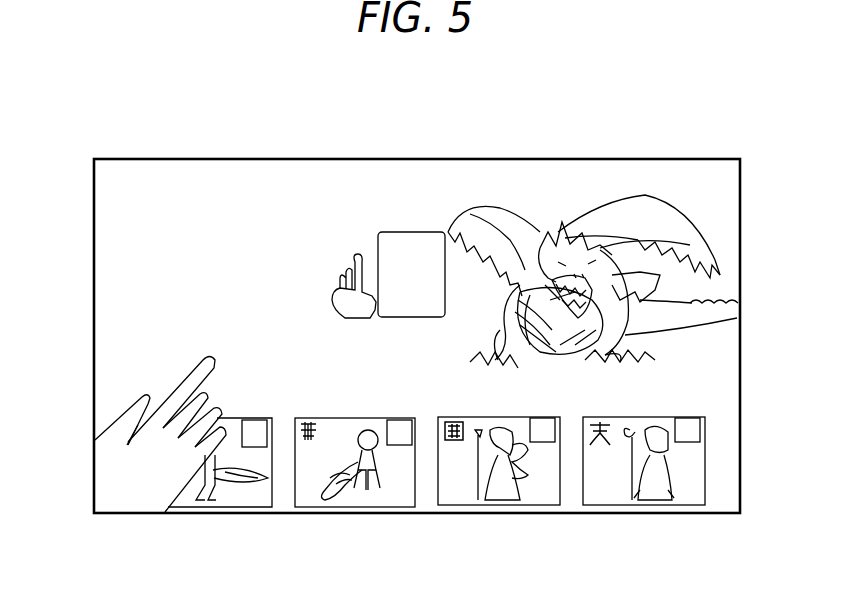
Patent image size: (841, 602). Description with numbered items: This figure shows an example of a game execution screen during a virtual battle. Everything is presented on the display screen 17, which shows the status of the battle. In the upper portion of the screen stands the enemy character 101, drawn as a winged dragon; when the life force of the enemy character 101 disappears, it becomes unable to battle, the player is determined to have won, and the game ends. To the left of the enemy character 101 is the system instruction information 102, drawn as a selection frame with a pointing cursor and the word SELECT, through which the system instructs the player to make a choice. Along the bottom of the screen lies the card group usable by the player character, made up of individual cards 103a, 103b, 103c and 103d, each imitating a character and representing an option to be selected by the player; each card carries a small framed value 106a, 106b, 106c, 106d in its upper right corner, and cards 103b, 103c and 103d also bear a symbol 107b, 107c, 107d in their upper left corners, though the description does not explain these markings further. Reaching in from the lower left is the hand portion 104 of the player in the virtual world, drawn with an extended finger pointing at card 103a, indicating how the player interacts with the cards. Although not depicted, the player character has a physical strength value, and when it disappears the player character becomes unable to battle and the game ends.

The display screen 17 is at (665, 158).
The enemy character 101 is at (497, 192).
The system instruction information 102 is at (372, 228).
The card 103a is at (230, 507).
The card 103b is at (367, 507).
The card 103c is at (503, 505).
The card 103d is at (648, 505).
The hand portion 104 is at (117, 466).
The card value display 106a is at (258, 420).
The card value display 106b is at (397, 418).
The card value display 106c is at (542, 417).
The card value display 106d is at (690, 417).
The card attribute display 107b is at (312, 418).
The card attribute display 107c is at (455, 417).
The card attribute display 107d is at (593, 417).